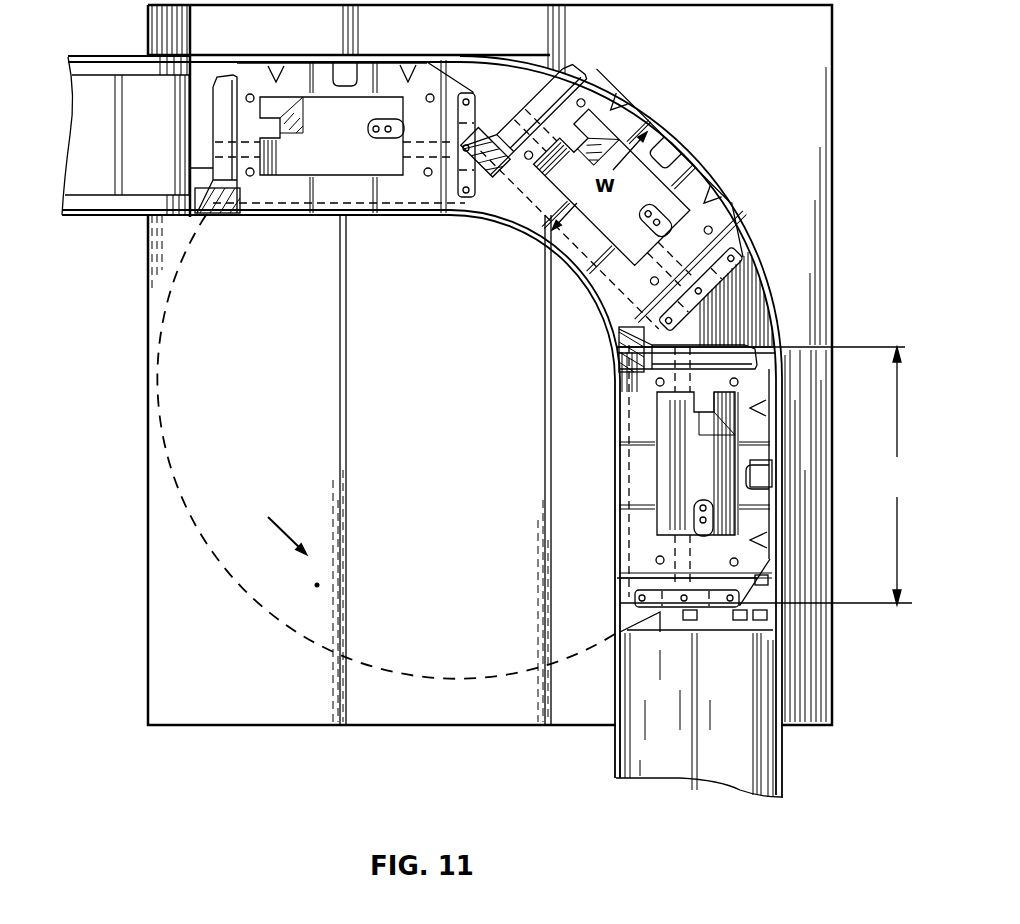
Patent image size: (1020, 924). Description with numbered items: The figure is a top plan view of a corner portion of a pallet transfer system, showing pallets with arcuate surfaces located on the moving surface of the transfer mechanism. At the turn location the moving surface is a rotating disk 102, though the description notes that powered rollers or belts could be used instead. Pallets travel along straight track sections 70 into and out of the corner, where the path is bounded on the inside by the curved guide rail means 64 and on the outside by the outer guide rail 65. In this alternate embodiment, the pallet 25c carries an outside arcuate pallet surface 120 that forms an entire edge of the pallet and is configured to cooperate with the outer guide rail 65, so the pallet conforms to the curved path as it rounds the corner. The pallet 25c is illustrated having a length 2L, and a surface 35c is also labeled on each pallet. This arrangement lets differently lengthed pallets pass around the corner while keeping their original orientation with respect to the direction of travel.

The straight track section 70 is at (130, 62).
The outer guide rail 65 is at (533, 62).
The guide rail means 64 is at (600, 308).
The pallet 25c is at (257, 78).
The arcuate surface 120 is at (437, 80).
The guide rail 35c is at (405, 213).
The rotating disk 102 is at (452, 446).
The length 2L is at (764, 476).